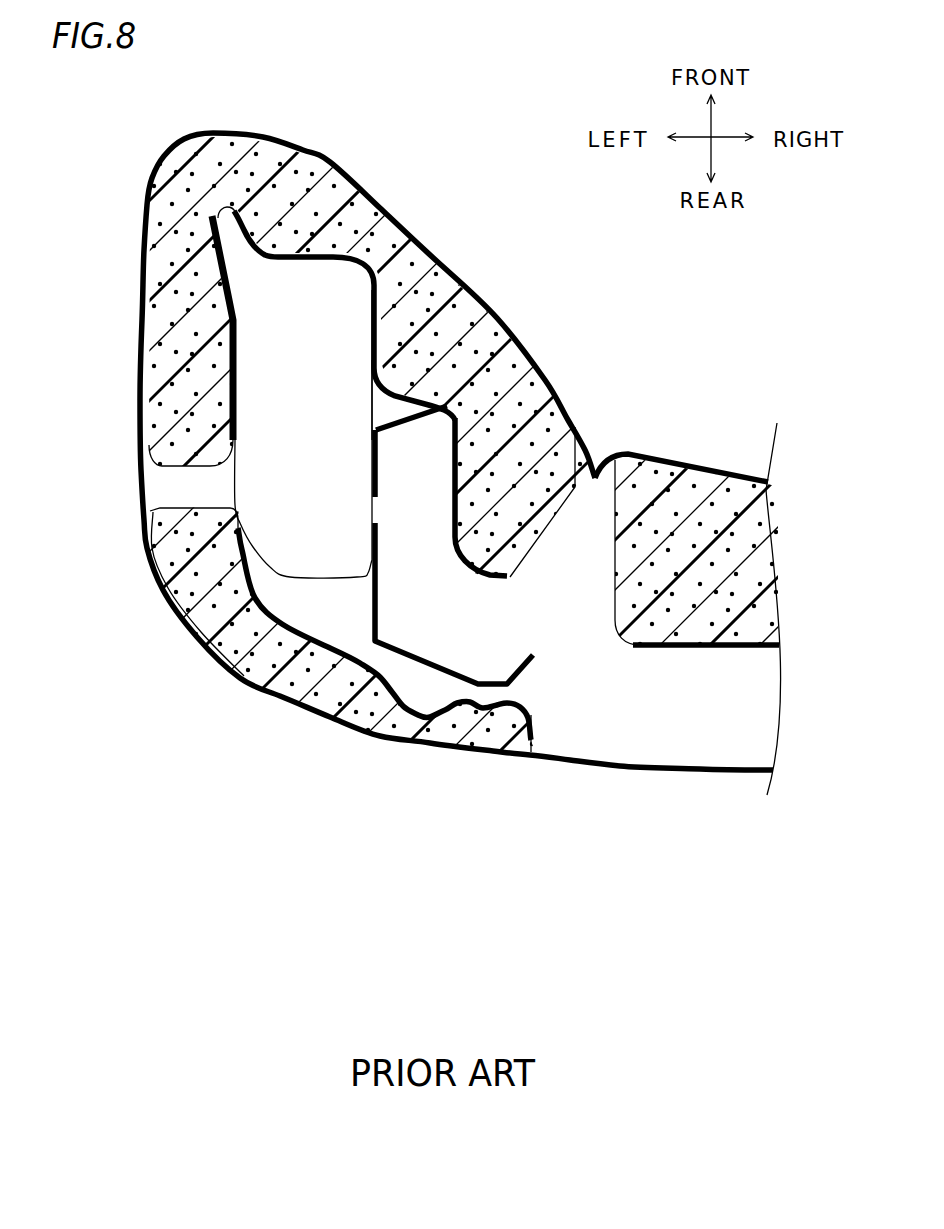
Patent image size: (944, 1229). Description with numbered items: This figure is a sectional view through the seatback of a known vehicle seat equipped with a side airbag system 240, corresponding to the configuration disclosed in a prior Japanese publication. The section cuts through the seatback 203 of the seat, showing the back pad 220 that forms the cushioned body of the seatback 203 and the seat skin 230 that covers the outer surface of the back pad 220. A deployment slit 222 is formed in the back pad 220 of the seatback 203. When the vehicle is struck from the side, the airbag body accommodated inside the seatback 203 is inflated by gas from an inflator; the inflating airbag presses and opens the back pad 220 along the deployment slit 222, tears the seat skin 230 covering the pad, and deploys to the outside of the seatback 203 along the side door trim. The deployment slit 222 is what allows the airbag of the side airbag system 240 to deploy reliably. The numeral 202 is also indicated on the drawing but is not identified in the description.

The pillar 202 is at (675, 299).
The seatback 203 is at (664, 382).
The back pad 220 is at (367, 221).
The deployment slit 222 is at (233, 258).
The seat skin 230 is at (440, 263).
The side airbag system 240 is at (285, 474).